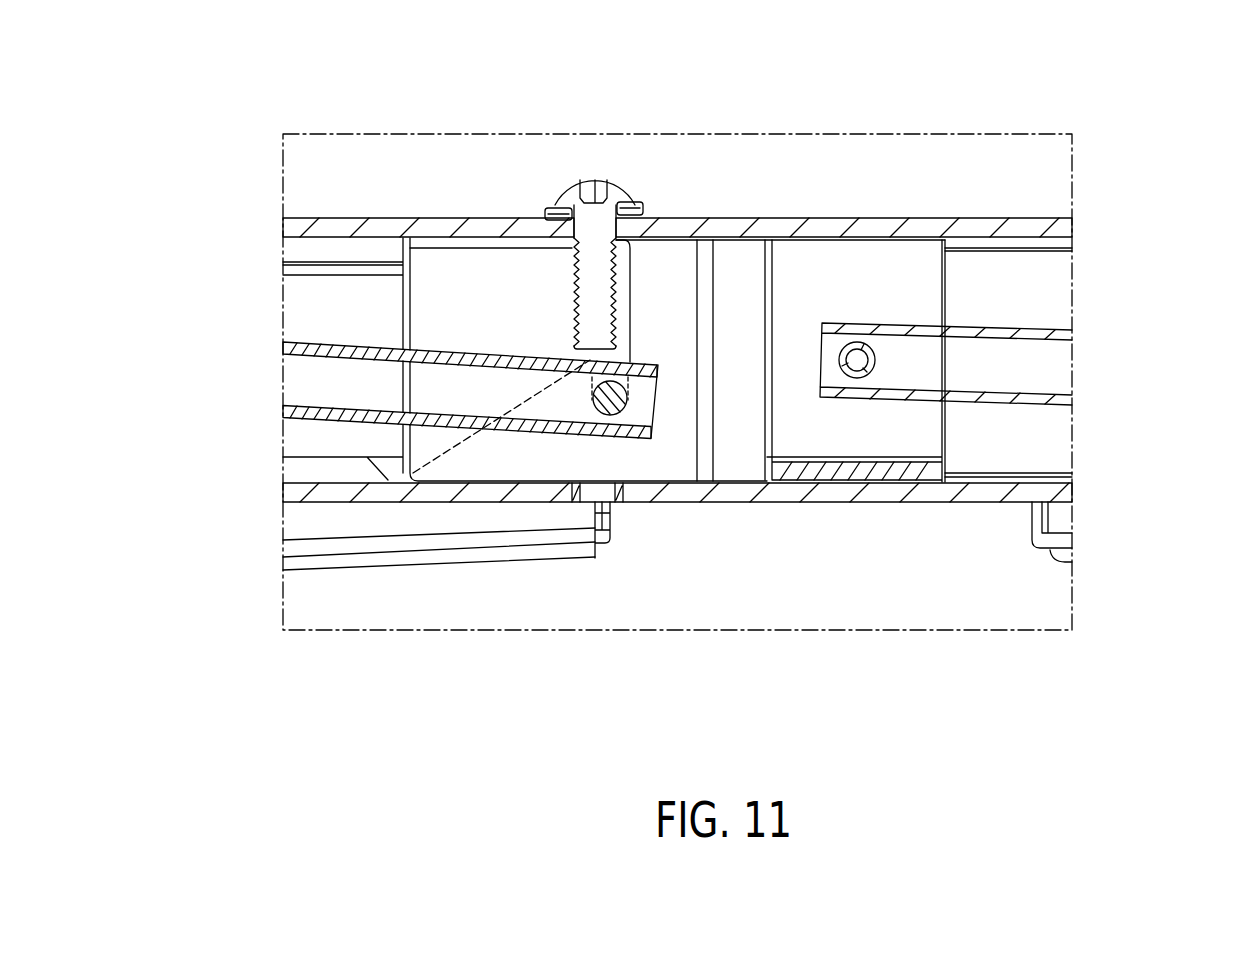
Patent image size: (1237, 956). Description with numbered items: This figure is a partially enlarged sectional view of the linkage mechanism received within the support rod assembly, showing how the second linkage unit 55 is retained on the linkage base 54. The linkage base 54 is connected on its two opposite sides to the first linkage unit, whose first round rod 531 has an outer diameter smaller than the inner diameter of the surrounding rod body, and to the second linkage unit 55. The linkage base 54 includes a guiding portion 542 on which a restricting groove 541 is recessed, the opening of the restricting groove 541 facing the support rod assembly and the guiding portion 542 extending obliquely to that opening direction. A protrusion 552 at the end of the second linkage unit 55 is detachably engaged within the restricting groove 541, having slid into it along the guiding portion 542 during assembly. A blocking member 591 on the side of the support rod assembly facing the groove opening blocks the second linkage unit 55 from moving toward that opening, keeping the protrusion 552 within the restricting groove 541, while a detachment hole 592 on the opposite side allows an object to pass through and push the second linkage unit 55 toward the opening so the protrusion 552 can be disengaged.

The second linkage unit 55 is at (448, 324).
The blocking member 591 is at (593, 236).
The restricting groove 541 is at (618, 356).
The first round rod 531 is at (993, 335).
The linkage base 54 is at (842, 288).
The guiding portion 542 is at (442, 454).
The detachment hole 592 is at (592, 505).
The protrusion 552 is at (617, 407).